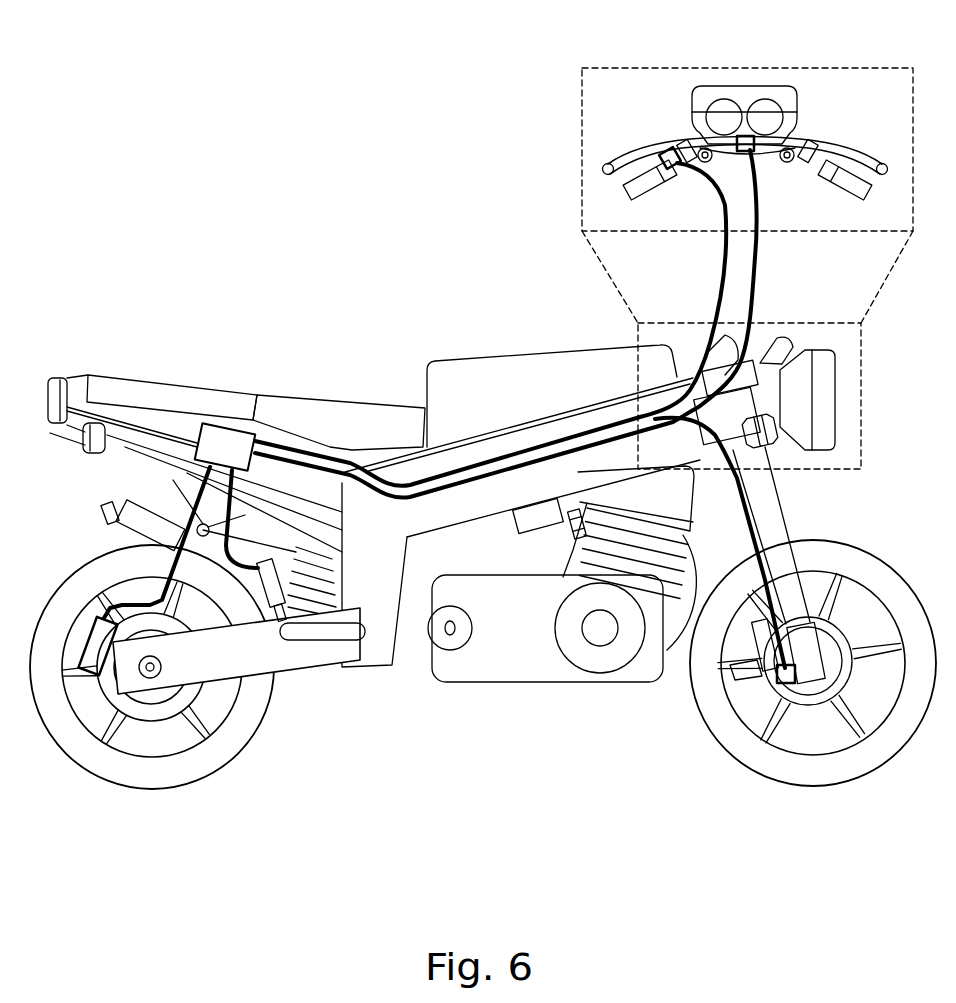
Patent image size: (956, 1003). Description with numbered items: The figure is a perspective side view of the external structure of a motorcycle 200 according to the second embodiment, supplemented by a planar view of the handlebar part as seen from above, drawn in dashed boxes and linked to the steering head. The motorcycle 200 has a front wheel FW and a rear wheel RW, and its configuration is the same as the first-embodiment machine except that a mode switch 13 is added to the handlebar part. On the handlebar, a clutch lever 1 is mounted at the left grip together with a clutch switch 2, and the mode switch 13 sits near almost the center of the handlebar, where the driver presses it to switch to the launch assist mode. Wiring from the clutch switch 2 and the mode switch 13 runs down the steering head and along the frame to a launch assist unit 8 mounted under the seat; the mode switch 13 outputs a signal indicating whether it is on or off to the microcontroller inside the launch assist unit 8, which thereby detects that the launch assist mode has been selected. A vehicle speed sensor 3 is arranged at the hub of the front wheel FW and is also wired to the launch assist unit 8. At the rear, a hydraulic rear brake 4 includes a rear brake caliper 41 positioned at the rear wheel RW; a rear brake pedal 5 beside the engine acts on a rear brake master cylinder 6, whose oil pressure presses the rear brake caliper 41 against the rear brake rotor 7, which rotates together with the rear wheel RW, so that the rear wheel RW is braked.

The motorcycle 200 is at (148, 77).
The clutch lever 1 is at (623, 160).
The clutch switch 2 is at (670, 150).
The mode switch 13 is at (750, 134).
The launch assist unit 8 is at (225, 425).
The hydraulic rear brake 4 is at (88, 632).
The rear brake caliper 41 is at (97, 646).
The rear brake master cylinder 6 is at (263, 623).
The rear brake pedal 5 is at (322, 632).
The rear brake rotor 7 is at (148, 712).
The vehicle speed sensor 3 is at (787, 685).
The rear wheel RW is at (110, 762).
The front wheel FW is at (717, 712).